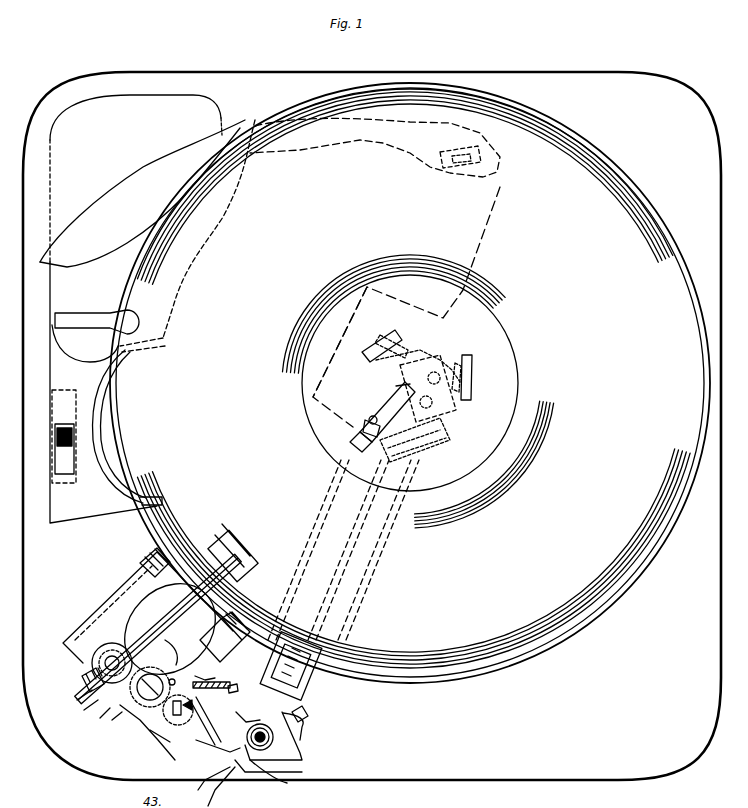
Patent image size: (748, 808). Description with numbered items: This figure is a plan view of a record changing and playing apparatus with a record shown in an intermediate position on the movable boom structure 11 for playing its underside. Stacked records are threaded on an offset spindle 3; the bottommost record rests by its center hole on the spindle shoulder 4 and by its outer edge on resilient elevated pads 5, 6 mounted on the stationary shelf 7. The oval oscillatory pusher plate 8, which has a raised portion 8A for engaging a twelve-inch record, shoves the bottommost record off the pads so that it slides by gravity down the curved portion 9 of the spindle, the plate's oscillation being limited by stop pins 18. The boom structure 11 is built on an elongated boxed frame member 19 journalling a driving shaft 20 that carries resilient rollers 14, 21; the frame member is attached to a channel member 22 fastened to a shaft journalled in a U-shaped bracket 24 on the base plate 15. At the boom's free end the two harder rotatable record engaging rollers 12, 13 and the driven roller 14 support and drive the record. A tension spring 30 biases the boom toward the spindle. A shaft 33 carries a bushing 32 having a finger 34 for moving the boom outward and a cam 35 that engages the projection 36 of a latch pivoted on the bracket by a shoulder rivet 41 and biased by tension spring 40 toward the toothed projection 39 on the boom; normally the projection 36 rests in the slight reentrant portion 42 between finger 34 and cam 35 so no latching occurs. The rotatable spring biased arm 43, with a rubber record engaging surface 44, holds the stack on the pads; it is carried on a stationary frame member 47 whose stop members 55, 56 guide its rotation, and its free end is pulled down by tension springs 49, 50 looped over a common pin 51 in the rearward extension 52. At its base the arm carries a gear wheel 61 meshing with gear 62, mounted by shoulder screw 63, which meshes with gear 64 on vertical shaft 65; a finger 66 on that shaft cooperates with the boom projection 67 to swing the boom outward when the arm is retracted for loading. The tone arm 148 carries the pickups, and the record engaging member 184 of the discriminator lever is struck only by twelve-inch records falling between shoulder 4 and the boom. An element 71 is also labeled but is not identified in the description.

The offset spindle 3 is at (350, 442).
The spindle shoulder 4 is at (365, 424).
The resilient elevated pad 5 is at (228, 645).
The resilient elevated pad 6 is at (152, 560).
The stationary shelf 7 is at (132, 602).
The oscillatory pusher plate 8 is at (528, 98).
The raised portion 8A is at (226, 655).
The curved portion of the spindle 9 is at (405, 395).
The boom structure 11 is at (56, 437).
The rotatable record engaging roller 12 is at (469, 356).
The rotatable record engaging roller 13 is at (400, 324).
The driven record engaging roller 14 is at (412, 455).
The base plate 15 is at (588, 745).
The stop pins 18 is at (112, 655).
The elongated boxed frame member 19 is at (368, 578).
The driving shaft 20 is at (345, 610).
The resilient roller 21 is at (307, 682).
The channel member 22 is at (303, 727).
The U-shaped bracket 24 is at (300, 750).
The tension spring 30 is at (210, 680).
The bushing 32 is at (298, 712).
The shaft 33 is at (261, 724).
The finger 34 is at (244, 709).
The cam 35 is at (276, 776).
The projection 36 is at (216, 787).
The toothed projection 39 is at (302, 762).
The tension spring 40 is at (206, 696).
The shoulder rivet 41 is at (196, 747).
The reentrant portion 42 is at (240, 690).
The spring biased arm 43 is at (214, 572).
The rubber record engaging surface 44 is at (157, 748).
The stationary frame member 47 is at (118, 722).
The tension spring 49 is at (102, 718).
The tension spring 50 is at (82, 678).
The common pin 51 is at (88, 710).
The rearward extension 52 is at (78, 700).
The stop member 55 is at (176, 650).
The stop member 56 is at (100, 650).
The gear wheel 61 is at (142, 732).
The gear 62 is at (165, 711).
The shoulder screw 63 is at (156, 676).
The gear 64 is at (155, 735).
The vertical shaft 65 is at (170, 748).
The finger 66 is at (205, 757).
The boom structure projection 67 is at (209, 779).
The pin 71 is at (372, 416).
The tone arm 148 is at (142, 203).
The record engaging member 184 is at (133, 318).